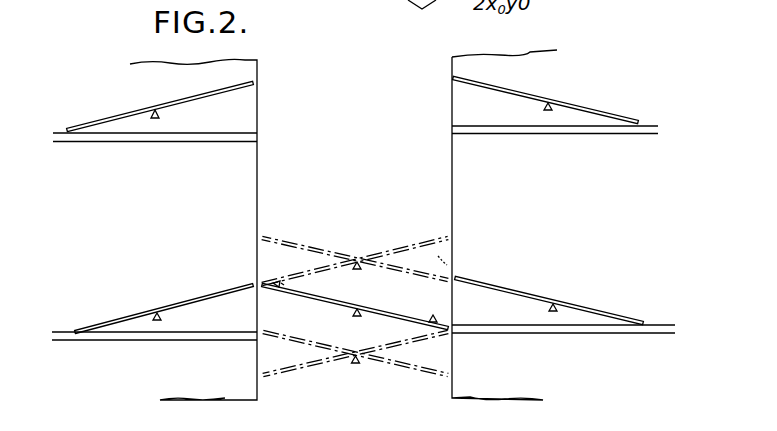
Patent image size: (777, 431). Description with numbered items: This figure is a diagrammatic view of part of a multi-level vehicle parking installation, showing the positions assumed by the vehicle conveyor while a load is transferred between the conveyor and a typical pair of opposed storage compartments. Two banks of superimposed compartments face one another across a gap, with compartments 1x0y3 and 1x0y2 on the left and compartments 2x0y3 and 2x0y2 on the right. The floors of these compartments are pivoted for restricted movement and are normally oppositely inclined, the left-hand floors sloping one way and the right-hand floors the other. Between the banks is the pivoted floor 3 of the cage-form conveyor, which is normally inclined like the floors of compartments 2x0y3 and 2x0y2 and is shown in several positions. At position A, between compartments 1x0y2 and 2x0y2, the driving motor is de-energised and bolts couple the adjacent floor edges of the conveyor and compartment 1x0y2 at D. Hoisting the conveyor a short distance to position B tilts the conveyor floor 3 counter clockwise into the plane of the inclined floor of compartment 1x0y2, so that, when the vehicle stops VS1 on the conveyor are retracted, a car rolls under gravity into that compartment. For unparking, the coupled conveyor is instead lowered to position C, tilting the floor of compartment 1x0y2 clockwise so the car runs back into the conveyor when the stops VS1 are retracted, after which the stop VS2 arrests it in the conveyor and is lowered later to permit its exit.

The vehicle storage compartment 1x0y3 is at (126, 109).
The vehicle storage compartment 1x0y2 is at (133, 251).
The vehicle storage compartment 2x0y3 is at (593, 94).
The vehicle storage compartment 2x0y2 is at (573, 234).
The floor of the vehicle conveyor 3 is at (373, 308).
The position A is at (346, 320).
The position B is at (355, 258).
The position C is at (356, 358).
The floor coupling point D is at (272, 272).
The vehicle stops VS1 is at (285, 284).
The vehicle stop VS2 is at (430, 315).